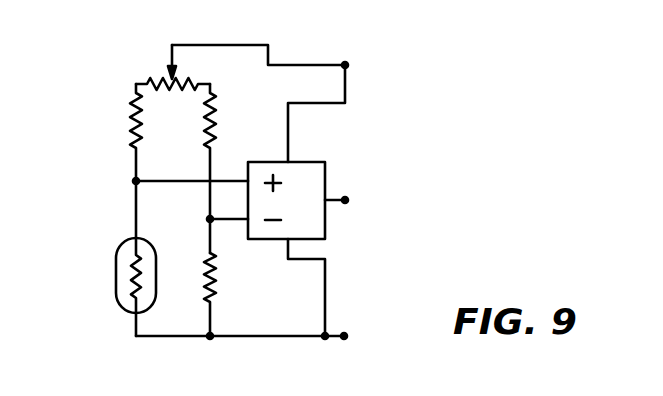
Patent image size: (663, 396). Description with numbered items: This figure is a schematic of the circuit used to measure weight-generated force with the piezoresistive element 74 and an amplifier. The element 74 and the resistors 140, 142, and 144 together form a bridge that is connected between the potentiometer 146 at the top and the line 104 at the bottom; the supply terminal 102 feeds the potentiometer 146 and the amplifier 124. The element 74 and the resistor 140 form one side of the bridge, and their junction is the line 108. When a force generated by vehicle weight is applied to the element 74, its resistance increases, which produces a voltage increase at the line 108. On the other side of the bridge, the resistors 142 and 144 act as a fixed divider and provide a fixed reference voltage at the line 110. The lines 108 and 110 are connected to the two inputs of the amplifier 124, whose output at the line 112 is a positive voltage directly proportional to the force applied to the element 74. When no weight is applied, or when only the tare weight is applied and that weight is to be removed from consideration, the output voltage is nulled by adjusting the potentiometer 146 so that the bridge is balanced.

The supply voltage terminal 102 is at (320, 65).
The line 104 is at (344, 334).
The line 108 is at (130, 179).
The line 110 is at (208, 218).
The line 112 is at (347, 200).
The amplifier 124 is at (300, 168).
The resistor 140 is at (131, 113).
The resistor 142 is at (216, 120).
The resistor 144 is at (218, 273).
The potentiometer 146 is at (156, 82).
The piezoresistive element 74 is at (118, 248).